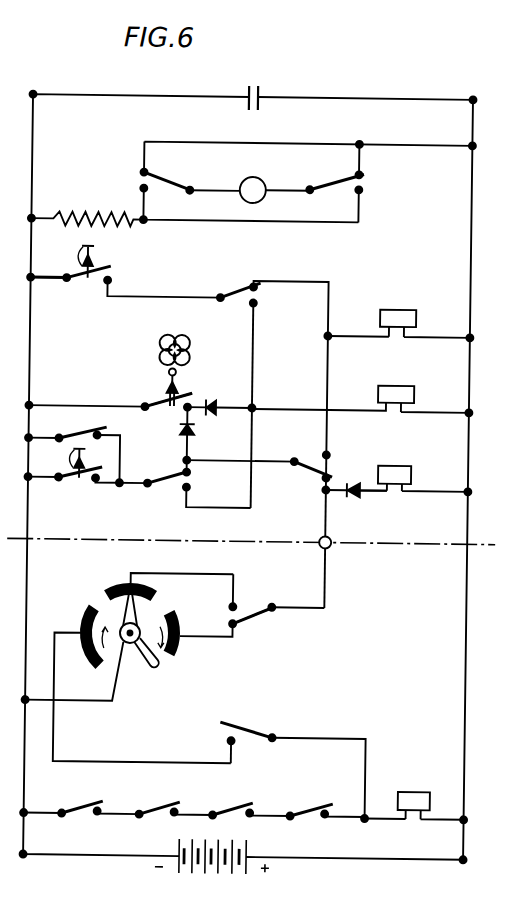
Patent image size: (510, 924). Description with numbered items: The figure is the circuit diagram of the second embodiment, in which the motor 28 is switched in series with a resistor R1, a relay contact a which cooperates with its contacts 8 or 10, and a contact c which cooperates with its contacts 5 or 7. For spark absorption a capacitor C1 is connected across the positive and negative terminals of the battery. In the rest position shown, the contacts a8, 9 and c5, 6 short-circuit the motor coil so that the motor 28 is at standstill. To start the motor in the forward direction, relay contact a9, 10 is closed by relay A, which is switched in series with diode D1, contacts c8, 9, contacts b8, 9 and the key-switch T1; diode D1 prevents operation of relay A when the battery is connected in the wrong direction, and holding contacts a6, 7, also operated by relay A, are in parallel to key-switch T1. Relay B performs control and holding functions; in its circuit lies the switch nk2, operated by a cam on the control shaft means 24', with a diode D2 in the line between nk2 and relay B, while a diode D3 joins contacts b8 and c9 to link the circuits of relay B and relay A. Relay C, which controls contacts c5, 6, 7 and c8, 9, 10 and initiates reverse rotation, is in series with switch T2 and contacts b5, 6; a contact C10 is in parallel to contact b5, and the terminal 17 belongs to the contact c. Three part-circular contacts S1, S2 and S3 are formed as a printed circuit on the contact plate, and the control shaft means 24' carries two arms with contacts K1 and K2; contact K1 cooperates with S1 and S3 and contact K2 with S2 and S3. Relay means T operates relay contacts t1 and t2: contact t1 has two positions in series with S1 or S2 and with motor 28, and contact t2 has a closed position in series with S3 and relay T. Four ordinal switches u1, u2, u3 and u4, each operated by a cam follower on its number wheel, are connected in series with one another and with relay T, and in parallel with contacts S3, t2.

The capacitor C1 is at (268, 107).
The resistor R1 is at (88, 206).
The motor 28 is at (258, 182).
The relay contact a is at (93, 431).
The relay contact b is at (178, 479).
The contact c is at (323, 468).
The contact terminal 5 is at (257, 288).
The contact terminal 6 is at (57, 447).
The contact terminal 7 is at (104, 436).
The contact terminal 8 is at (225, 325).
The contact terminal 9 is at (222, 350).
The contact terminal 10 is at (139, 194).
The contact terminal 17 is at (370, 201).
The key-switch T1 is at (86, 471).
The switch T2 is at (124, 276).
The control shaft means 24' is at (155, 349).
The switch nk2 is at (167, 375).
The diode D1 is at (357, 497).
The diode D2 is at (213, 401).
The diode D3 is at (195, 431).
The relay A is at (412, 472).
The relay B is at (414, 392).
The relay C is at (415, 316).
The relay means T is at (435, 800).
The part-circular contact S1 is at (148, 603).
The part-circular contact S2 is at (183, 627).
The part-circular contact S3 is at (86, 622).
The contact K1 is at (133, 613).
The contact K2 is at (154, 663).
The relay contact t1 is at (277, 608).
The relay contact t2 is at (292, 770).
The ordinal switch u1 is at (80, 800).
The ordinal switch u2 is at (158, 802).
The ordinal switch u3 is at (231, 803).
The ordinal switch u4 is at (310, 805).